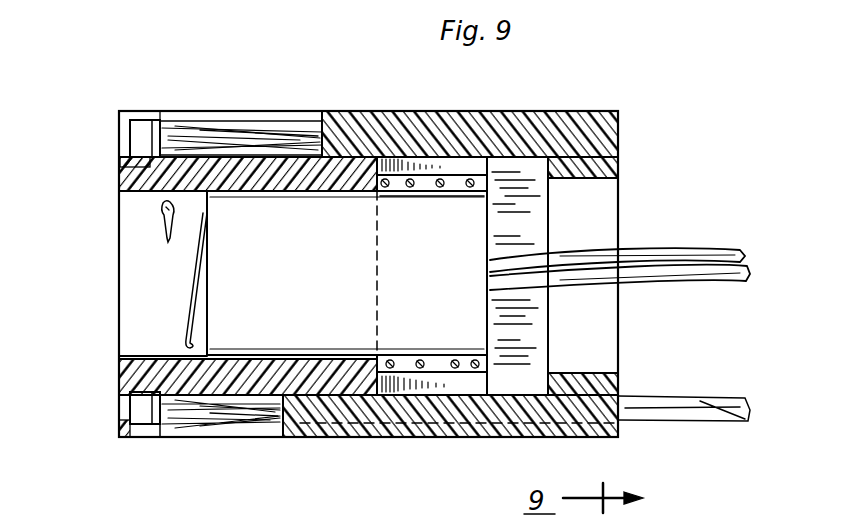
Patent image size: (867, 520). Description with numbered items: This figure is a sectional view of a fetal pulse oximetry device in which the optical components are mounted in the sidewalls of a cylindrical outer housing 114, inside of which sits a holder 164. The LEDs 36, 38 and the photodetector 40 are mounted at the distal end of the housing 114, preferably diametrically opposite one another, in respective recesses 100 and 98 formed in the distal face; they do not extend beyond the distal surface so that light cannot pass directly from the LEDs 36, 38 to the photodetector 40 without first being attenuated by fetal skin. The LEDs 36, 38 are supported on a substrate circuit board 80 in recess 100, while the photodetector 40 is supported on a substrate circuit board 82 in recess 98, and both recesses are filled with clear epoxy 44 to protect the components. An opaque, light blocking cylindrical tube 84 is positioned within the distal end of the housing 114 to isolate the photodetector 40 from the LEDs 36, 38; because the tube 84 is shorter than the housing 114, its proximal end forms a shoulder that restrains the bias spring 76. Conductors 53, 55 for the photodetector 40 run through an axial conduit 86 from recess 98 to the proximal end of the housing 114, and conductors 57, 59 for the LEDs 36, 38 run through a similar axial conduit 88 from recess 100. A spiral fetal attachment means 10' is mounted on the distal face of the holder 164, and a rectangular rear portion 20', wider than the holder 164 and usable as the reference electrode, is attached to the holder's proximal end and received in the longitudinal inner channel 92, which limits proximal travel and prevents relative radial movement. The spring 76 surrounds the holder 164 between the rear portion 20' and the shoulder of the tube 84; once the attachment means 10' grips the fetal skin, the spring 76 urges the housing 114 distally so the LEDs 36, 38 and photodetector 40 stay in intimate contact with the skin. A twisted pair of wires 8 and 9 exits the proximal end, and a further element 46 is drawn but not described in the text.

The cylindrical outer housing 114 is at (535, 111).
The clear epoxy 44 is at (128, 114).
The LED 36 is at (140, 130).
The LED 38 is at (140, 144).
The recess 100 is at (120, 157).
The substrate circuit board 80 is at (160, 112).
The axial conduit 88 is at (215, 130).
The conductor 57 is at (283, 145).
The conductor 59 is at (259, 133).
The inner channel 92 is at (457, 160).
The bias spring 76 is at (427, 195).
The lower bearing block 46 is at (405, 358).
The holder 164 is at (313, 266).
The rear portion 20' is at (578, 276).
The fetal attachment means 10' is at (128, 274).
The wire 8 is at (722, 250).
The wire 9 is at (720, 284).
The light blocking cylindrical tube 84 is at (122, 365).
The recess 98 is at (125, 395).
The photodetector 40 is at (137, 406).
The substrate circuit board 82 is at (155, 437).
The axial conduit 86 is at (200, 413).
The conductor 53 is at (272, 423).
The conductor 55 is at (244, 414).